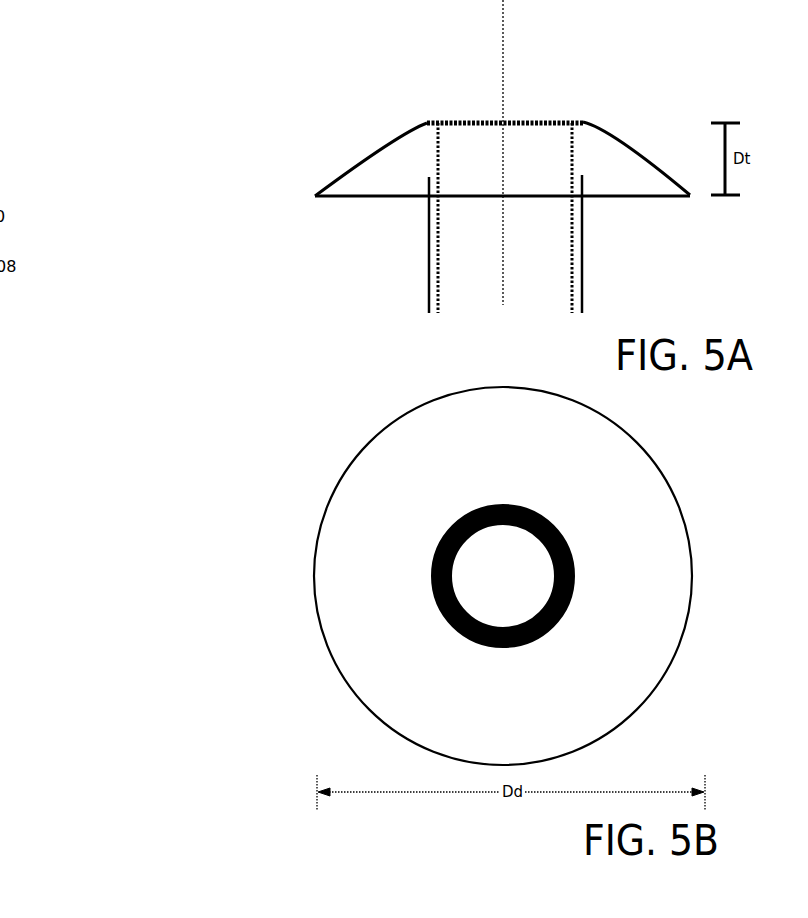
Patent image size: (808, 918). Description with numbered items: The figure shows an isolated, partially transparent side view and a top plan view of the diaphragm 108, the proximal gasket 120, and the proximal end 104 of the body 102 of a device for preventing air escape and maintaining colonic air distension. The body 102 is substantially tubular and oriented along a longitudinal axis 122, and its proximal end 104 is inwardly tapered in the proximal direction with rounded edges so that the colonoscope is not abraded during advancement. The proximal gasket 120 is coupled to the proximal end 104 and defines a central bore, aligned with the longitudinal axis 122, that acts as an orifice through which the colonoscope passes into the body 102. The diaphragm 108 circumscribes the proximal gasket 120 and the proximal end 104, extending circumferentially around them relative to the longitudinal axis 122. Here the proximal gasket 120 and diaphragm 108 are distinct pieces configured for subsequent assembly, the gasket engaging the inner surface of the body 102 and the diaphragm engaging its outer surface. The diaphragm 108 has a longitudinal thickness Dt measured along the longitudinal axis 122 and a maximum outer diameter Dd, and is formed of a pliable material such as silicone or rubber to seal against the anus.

In FIG. 5B, the body 102 is at (576, 592).
In FIG. 5A, the proximal end 104 is at (614, 111).
In FIG. 5A, the diaphragm 108 is at (367, 142).
In FIG. 5A, the proximal gasket 120 is at (520, 108).
In FIG. 5A, the longitudinal axis 122 is at (498, 49).